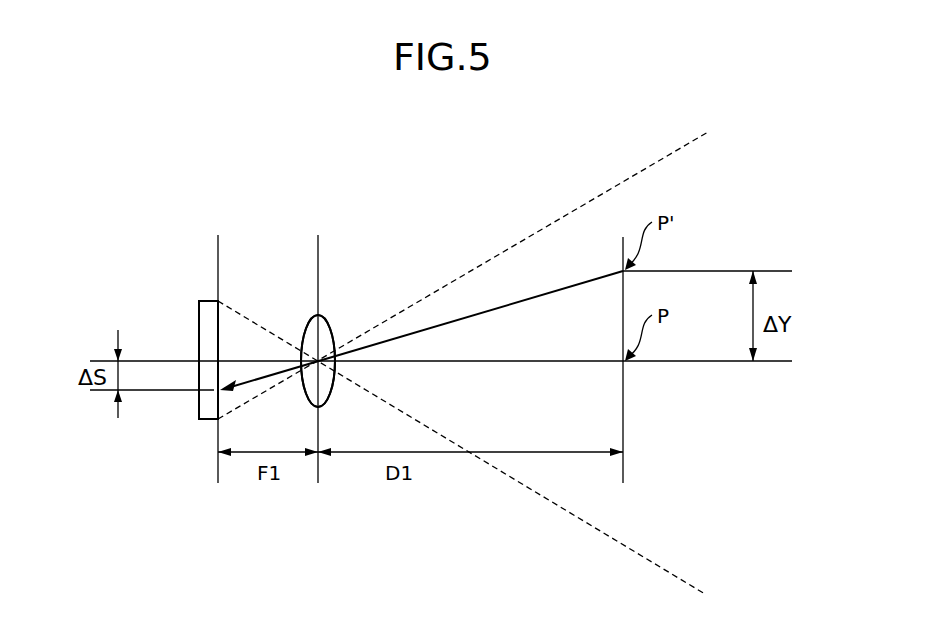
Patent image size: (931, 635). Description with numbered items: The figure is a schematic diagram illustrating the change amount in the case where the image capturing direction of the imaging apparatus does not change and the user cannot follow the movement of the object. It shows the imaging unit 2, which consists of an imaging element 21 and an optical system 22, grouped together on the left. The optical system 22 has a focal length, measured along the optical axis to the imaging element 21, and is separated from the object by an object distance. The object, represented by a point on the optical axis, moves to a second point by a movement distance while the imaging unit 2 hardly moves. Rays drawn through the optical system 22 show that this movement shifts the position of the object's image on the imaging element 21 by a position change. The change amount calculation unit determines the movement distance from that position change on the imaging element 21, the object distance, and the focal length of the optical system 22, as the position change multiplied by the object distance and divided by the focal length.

The imaging unit 2 is at (365, 171).
The imaging element 21 is at (199, 326).
The optical system 22 is at (330, 320).